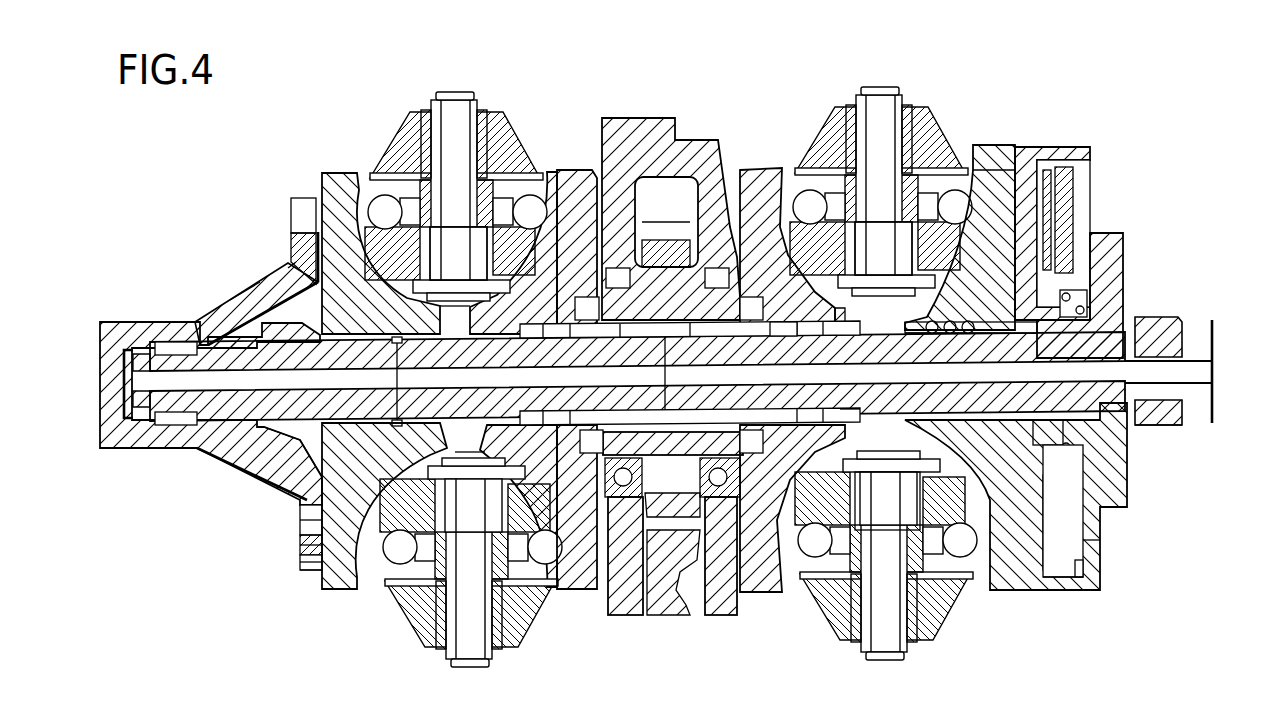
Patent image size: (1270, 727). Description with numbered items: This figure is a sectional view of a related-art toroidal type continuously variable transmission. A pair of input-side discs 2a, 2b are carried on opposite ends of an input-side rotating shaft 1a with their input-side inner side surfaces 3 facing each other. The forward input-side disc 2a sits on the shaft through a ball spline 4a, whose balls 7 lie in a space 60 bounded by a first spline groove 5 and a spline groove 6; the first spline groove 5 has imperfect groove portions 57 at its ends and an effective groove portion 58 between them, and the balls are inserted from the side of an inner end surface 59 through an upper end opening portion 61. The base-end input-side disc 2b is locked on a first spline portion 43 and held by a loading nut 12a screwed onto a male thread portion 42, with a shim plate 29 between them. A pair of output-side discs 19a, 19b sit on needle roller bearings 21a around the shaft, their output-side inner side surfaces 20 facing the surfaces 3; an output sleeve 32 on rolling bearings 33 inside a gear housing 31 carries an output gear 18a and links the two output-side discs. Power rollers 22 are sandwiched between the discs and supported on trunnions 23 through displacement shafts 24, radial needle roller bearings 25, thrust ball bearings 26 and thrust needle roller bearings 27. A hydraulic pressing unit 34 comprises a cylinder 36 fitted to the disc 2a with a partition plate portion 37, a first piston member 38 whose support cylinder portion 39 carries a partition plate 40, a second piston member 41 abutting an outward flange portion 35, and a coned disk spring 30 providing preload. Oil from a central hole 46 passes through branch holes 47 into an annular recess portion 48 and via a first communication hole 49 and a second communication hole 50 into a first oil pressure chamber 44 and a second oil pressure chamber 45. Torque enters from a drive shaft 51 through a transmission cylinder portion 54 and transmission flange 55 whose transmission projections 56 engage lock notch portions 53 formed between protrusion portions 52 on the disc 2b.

The input-side rotating shaft 1a is at (655, 402).
The input-side disc 2a is at (980, 140).
The input-side disc 2b is at (345, 165).
The input-side inner side surface 3 is at (361, 172).
The ball spline 4a is at (992, 158).
The first spline groove 5 is at (916, 340).
The spline groove 6 is at (955, 320).
The ball 7 is at (976, 345).
The loading nut 12a is at (250, 294).
The output gear 18a is at (668, 225).
The output-side disc 19a is at (752, 162).
The output-side disc 19b is at (578, 162).
The output-side inner side surface 20 is at (503, 300).
The needle roller bearing 21a is at (555, 345).
The power roller 22 is at (609, 160).
The trunnion 23 is at (505, 118).
The displacement shaft 24 is at (454, 110).
The radial needle roller bearing 25 is at (432, 252).
The thrust ball bearing 26 is at (536, 200).
The thrust needle roller bearing 27 is at (378, 172).
The shim plate 29 is at (294, 265).
The coned disk spring 30 is at (1102, 515).
The gear housing 31 is at (655, 130).
The output sleeve 32 is at (613, 350).
The rolling bearing 33 is at (720, 340).
The hydraulic pressing unit 34 is at (1087, 145).
The outward flange portion 35 is at (1125, 240).
The cylinder 36 is at (1032, 150).
The partition plate portion 37 is at (1080, 210).
The first piston member 38 is at (1055, 185).
The support cylinder portion 39 is at (1002, 592).
The partition plate 40 is at (1100, 568).
The second piston member 41 is at (1128, 476).
The male thread portion 42 is at (236, 432).
The first spline portion 43 is at (332, 378).
The first oil pressure chamber 44 is at (1100, 542).
The second oil pressure chamber 45 is at (1070, 580).
The central hole 46 is at (1215, 372).
The branch hole 47 is at (1142, 318).
The annular recess portion 48 is at (1175, 428).
The first communication hole 49 is at (1087, 295).
The second communication hole 50 is at (1090, 312).
The drive shaft 51 is at (130, 447).
The protrusion portion 52 is at (293, 210).
The lock notch portion 53 is at (293, 240).
The transmission cylinder portion 54 is at (212, 320).
The transmission flange 55 is at (302, 524).
The transmission projection 56 is at (300, 198).
The imperfect groove portion 57 is at (821, 330).
The effective groove portion 58 is at (847, 390).
The inner end surface 59 is at (890, 442).
The space 60 is at (925, 322).
The upper end opening portion 61 is at (906, 325).